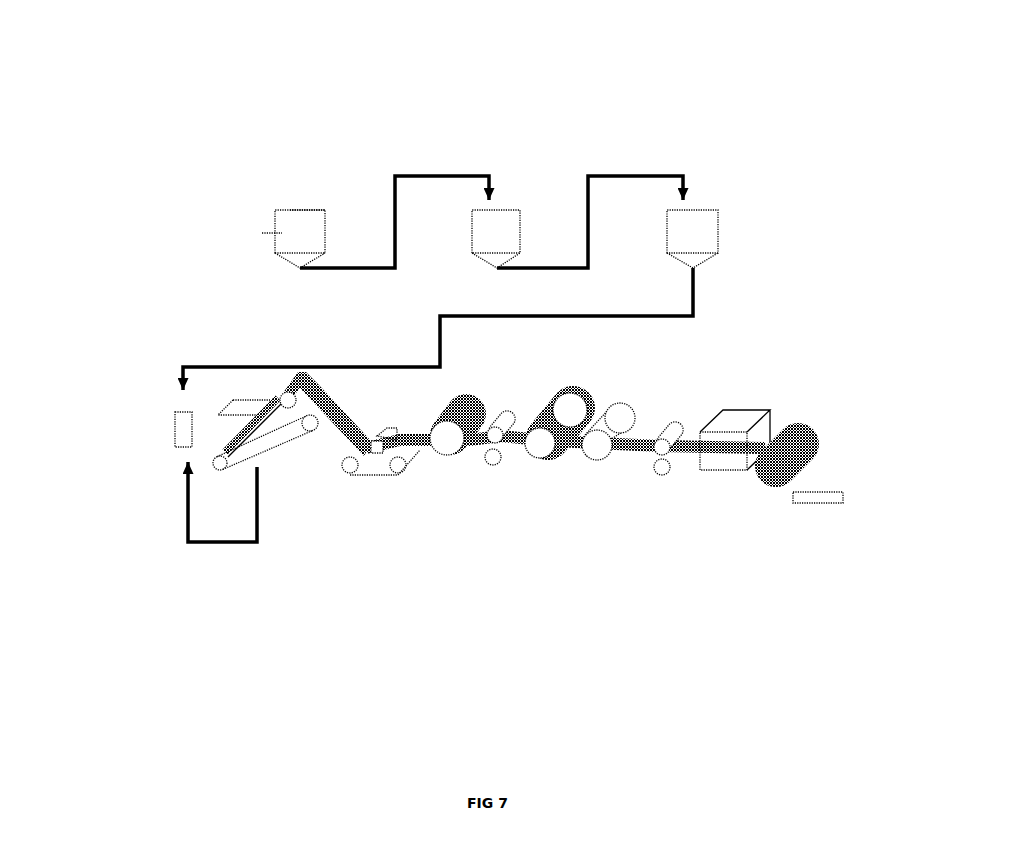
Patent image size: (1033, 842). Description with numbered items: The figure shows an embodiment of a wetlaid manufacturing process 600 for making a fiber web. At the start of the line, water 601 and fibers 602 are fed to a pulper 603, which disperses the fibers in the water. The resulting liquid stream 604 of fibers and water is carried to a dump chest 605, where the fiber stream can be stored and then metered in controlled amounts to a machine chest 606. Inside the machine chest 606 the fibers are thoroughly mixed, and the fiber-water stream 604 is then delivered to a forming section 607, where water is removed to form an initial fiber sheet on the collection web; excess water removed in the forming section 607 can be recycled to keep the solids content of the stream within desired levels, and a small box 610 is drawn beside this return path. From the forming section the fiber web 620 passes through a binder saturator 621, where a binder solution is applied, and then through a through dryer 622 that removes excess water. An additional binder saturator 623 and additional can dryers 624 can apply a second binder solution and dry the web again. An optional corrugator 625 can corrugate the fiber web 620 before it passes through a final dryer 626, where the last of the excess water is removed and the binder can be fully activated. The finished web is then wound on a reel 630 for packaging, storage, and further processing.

The wetlaid manufacturing process 600 is at (768, 85).
The water 601 is at (283, 198).
The fibers 602 is at (312, 197).
The pulper 603 is at (257, 233).
The liquid stream 604 is at (456, 163).
The dump chest 605 is at (525, 205).
The machine chest 606 is at (725, 208).
The forming section 607 is at (227, 550).
The metering box 610 is at (172, 487).
The fiber web 620 is at (270, 384).
The binder saturator 621 is at (372, 457).
The through dryer 622 is at (437, 457).
The additional binder saturator 623 is at (503, 477).
The additional can dryers 624 is at (573, 455).
The corrugator 625 is at (668, 480).
The final dryer 626 is at (730, 480).
The reel 630 is at (785, 500).